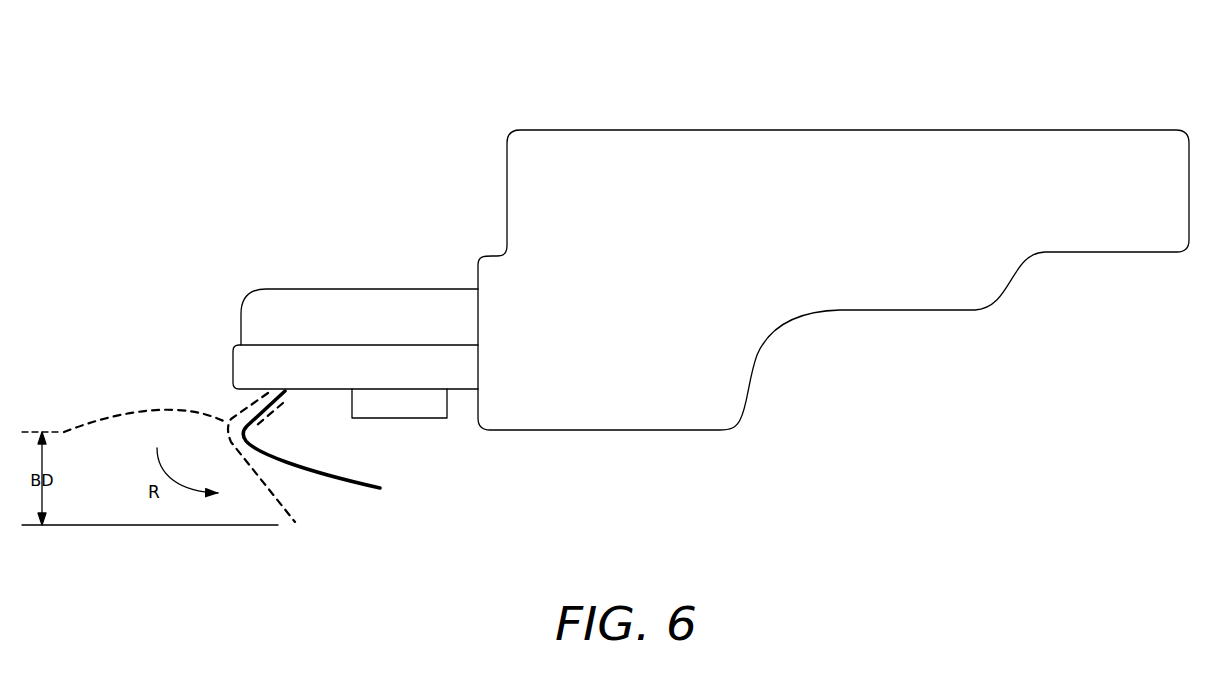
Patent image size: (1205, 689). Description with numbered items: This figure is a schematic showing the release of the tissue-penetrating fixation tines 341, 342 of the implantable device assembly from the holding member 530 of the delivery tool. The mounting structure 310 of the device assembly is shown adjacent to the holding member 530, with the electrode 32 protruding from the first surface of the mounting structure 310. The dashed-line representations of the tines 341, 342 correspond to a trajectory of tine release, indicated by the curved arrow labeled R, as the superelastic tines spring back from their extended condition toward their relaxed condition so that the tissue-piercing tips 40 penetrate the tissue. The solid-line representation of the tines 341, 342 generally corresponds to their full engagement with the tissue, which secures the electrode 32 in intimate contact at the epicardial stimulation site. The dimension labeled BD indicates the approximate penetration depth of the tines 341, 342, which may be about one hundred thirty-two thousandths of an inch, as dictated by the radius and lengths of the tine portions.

The holding member 530 is at (645, 92).
The mounting structure 310 is at (335, 253).
The electrode 32 is at (390, 432).
The tissue-piercing tip 40 is at (372, 493).
The first tissue-penetrating fixation tine 341 is at (252, 484).
The second tissue-penetrating fixation tine 342 is at (320, 503).